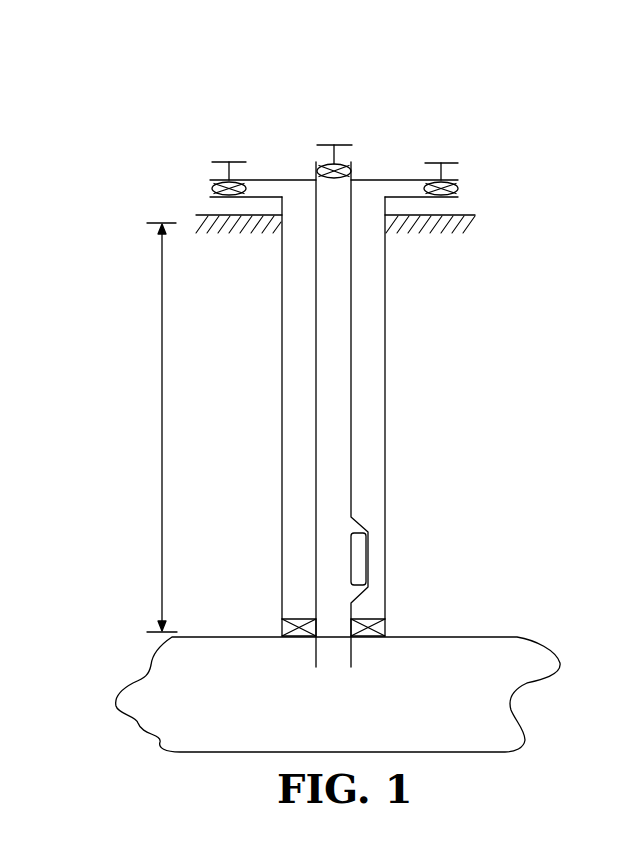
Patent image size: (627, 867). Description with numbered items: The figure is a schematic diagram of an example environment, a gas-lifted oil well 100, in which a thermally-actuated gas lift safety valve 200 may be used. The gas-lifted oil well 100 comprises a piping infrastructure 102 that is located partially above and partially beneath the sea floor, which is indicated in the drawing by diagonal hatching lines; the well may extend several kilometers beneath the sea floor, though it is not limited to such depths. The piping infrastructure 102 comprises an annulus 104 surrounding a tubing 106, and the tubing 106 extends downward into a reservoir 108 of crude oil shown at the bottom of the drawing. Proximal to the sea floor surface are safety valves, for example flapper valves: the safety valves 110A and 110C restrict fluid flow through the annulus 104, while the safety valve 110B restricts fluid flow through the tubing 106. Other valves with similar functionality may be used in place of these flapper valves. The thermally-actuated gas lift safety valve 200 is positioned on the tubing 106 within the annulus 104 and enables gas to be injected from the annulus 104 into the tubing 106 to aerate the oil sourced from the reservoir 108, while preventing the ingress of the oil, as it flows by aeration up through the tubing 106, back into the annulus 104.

The gas-lifted oil well 100 is at (528, 162).
The piping infrastructure 102 is at (200, 189).
The annulus 104 is at (292, 315).
The tubing 106 is at (335, 443).
The reservoir 108 is at (121, 690).
The safety valve 110A is at (220, 160).
The safety valve 110B is at (323, 145).
The safety valve 110C is at (428, 162).
The thermally-actuated gas lift safety valve 200 is at (374, 560).